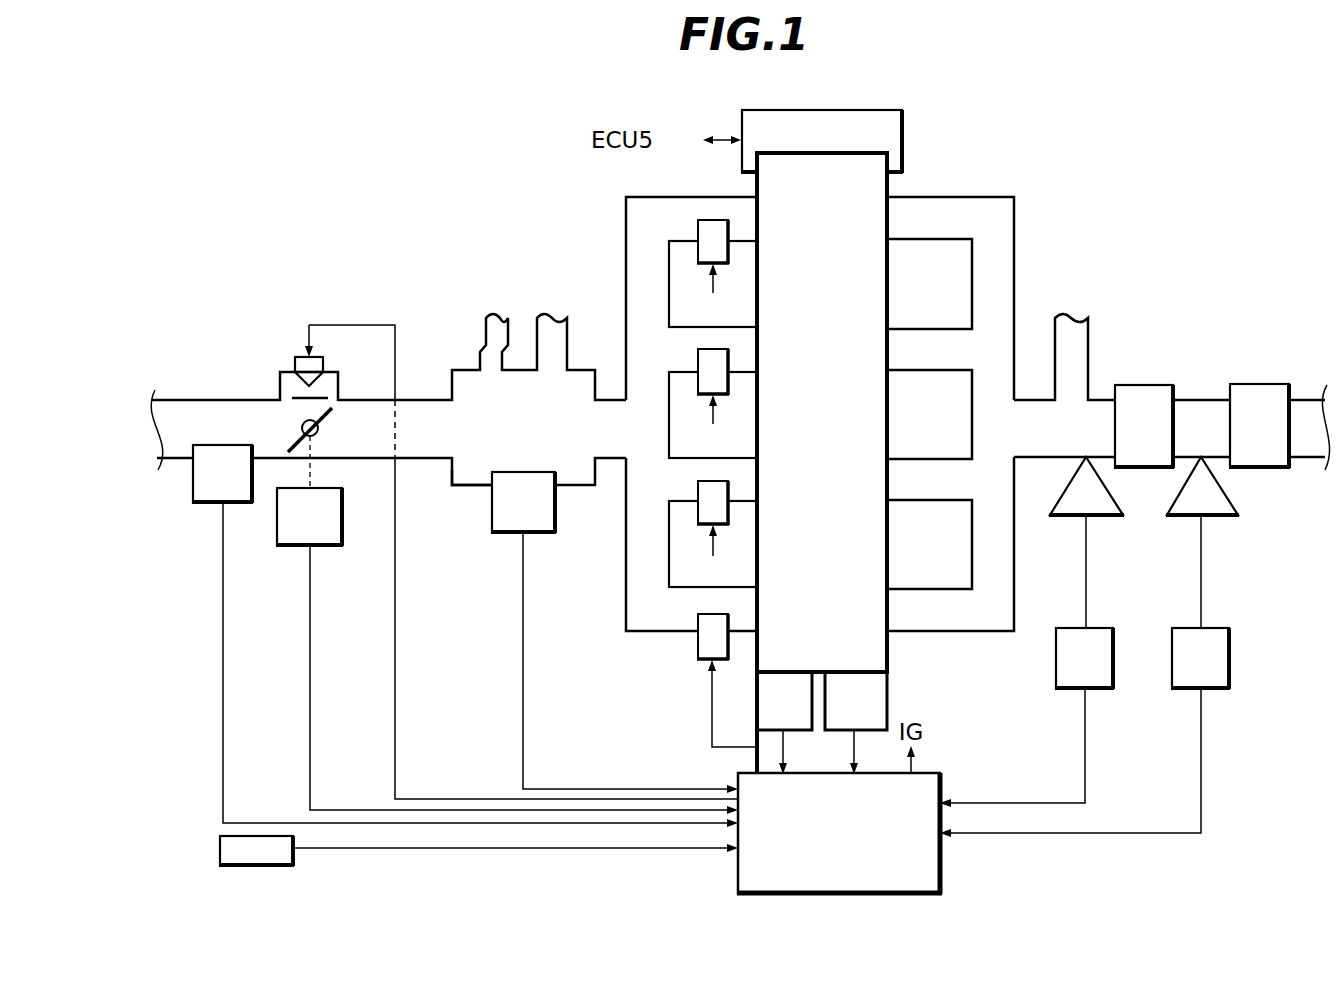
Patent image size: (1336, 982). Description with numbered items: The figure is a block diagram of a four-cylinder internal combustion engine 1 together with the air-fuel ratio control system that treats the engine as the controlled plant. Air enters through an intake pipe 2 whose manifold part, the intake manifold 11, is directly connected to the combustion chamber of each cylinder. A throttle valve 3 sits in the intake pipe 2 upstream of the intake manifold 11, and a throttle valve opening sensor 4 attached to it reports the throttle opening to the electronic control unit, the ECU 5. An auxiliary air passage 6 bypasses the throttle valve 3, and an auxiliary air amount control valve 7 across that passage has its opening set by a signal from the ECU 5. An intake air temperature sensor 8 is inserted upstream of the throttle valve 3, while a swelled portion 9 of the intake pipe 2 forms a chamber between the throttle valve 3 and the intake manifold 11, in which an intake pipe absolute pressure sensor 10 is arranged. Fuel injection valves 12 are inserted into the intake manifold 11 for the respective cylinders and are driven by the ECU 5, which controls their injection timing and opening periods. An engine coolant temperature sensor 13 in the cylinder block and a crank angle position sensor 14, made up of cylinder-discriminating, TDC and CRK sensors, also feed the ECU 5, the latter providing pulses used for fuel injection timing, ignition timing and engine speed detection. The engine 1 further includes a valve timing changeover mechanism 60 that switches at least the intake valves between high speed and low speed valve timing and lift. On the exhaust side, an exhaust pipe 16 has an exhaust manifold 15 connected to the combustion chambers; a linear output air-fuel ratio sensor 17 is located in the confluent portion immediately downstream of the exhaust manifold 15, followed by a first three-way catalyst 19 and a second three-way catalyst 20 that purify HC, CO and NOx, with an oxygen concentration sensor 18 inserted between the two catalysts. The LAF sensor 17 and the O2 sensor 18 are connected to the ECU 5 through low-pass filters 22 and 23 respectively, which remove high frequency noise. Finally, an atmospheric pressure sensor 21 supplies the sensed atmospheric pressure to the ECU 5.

The internal combustion engine 1 is at (889, 648).
The intake pipe 2 is at (205, 400).
The throttle valve 3 is at (330, 420).
The throttle valve opening (θTH) sensor 4 is at (325, 547).
The electronic control unit (ECU) 5 is at (944, 790).
The auxiliary air passage 6 is at (290, 378).
The auxiliary air amount control valve 7 is at (300, 355).
The intake air temperature (TA) sensor 8 is at (205, 505).
The swelled portion (chamber) 9 is at (458, 497).
The intake pipe absolute pressure (PBA) sensor 10 is at (505, 535).
The intake manifold 11 is at (653, 197).
The fuel injection valves 12 is at (697, 228).
The engine coolant temperature (TW) sensor 13 is at (753, 680).
The crank angle position sensor 14 is at (889, 688).
The exhaust manifold 15 is at (905, 197).
The exhaust pipe 16 is at (1100, 395).
The linear output air-fuel ratio (LAF) sensor 17 is at (1096, 518).
The oxygen concentration (O2) sensor 18 is at (1210, 518).
The first three-way catalyst 19 is at (1152, 384).
The second three-way catalyst 20 is at (1264, 384).
The atmospheric pressure (PA) sensor 21 is at (220, 848).
The low-pass filter 22 is at (1095, 690).
The low-pass filter 23 is at (1210, 690).
The valve timing changeover mechanism 60 is at (905, 150).